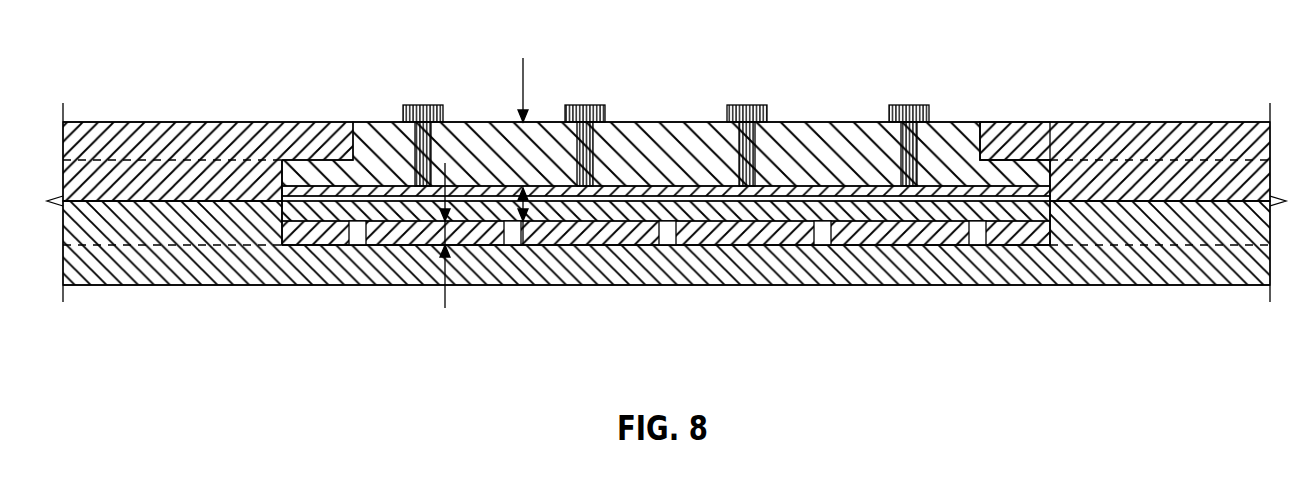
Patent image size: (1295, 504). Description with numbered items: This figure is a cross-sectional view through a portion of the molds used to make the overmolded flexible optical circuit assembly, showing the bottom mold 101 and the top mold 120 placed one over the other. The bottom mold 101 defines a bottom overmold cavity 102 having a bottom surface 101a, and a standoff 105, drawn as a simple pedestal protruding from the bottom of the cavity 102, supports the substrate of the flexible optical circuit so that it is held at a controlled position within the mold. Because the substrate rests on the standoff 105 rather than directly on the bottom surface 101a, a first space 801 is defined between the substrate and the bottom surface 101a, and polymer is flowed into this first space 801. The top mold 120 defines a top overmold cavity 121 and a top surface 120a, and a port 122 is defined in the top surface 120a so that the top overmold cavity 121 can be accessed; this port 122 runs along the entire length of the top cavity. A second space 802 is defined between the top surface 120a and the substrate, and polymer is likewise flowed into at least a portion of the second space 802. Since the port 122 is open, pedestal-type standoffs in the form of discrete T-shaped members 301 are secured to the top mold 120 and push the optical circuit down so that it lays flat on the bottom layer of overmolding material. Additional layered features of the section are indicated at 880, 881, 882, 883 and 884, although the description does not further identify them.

The bottom mold 101 is at (915, 285).
The bottom surface 101a is at (737, 245).
The bottom overmold cavity 102 is at (1017, 232).
The standoff 105 is at (822, 234).
The top mold 120 is at (1070, 120).
The top surface 120a is at (800, 122).
The top overmold cavity 121 is at (948, 152).
The port 122 is at (678, 122).
The T-shaped member 301 is at (910, 105).
The first space 801 is at (445, 297).
The second space 802 is at (524, 60).
The bonding interface 880 is at (313, 209).
The first adhesive layer 881 is at (342, 207).
The thin conductive layer 882 is at (303, 196).
The second adhesive layer 883 is at (573, 232).
The conductive via 884 is at (470, 121).